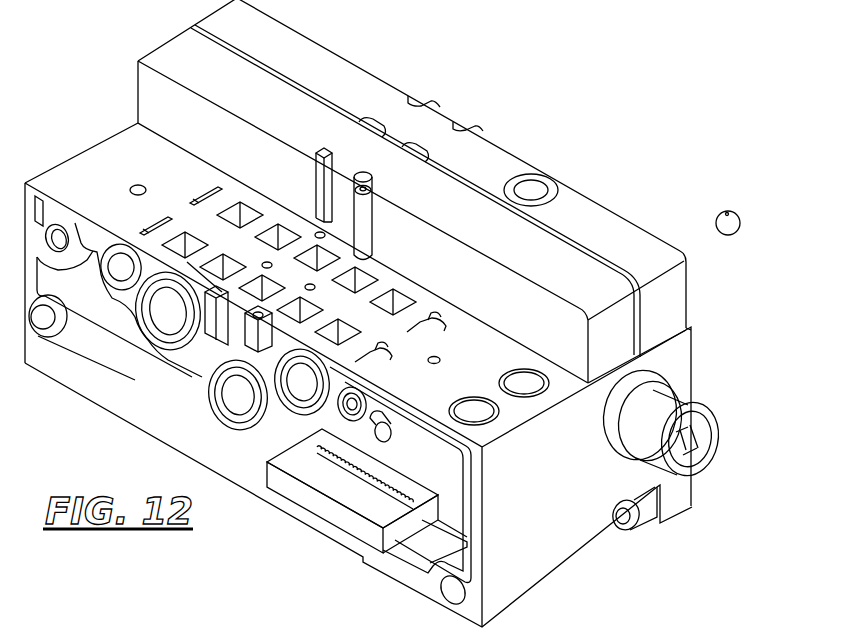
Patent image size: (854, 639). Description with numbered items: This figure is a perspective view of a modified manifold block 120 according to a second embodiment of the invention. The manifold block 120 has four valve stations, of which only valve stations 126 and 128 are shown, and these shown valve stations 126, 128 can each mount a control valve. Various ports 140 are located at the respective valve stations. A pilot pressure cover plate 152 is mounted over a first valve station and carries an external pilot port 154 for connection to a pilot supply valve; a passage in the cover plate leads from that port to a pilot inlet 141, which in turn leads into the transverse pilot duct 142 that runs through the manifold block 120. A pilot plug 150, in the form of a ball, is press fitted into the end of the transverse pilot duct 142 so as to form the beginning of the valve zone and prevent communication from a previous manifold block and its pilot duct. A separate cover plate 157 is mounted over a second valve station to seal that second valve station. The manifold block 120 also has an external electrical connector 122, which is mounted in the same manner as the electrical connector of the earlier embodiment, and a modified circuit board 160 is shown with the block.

The manifold block 120 is at (531, 563).
The external electrical connector 122 is at (688, 403).
The valve station 126 is at (199, 187).
The valve station 128 is at (139, 215).
The ports 140 is at (273, 235).
The pilot inlet 141 is at (386, 352).
The transverse pilot duct 142 is at (351, 422).
The pilot plug 150 is at (698, 242).
The pilot pressure cover plate 152 is at (601, 213).
The external pilot port 154 is at (533, 184).
The cover plate 157 is at (178, 57).
The circuit board 160 is at (440, 479).